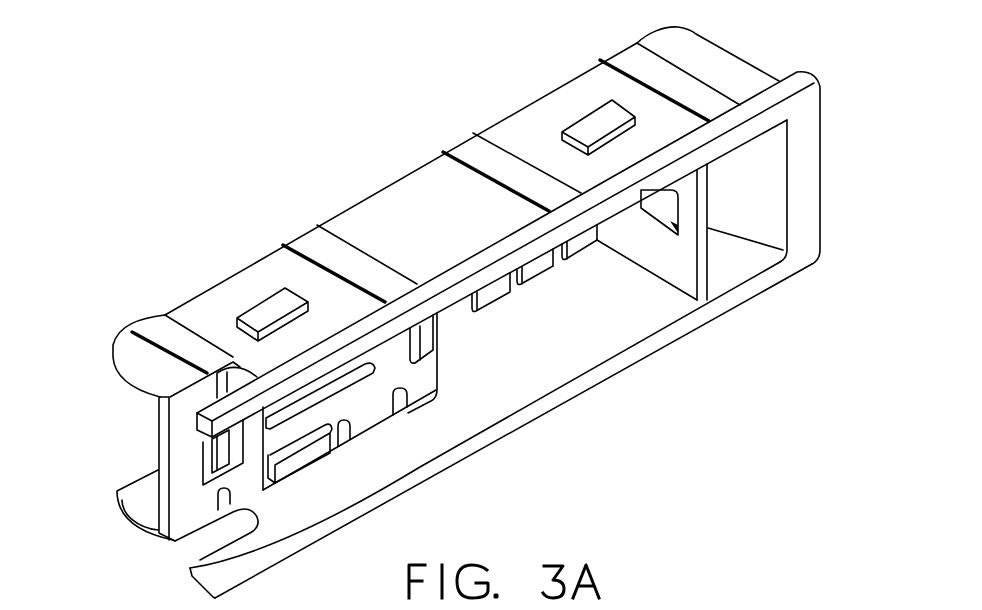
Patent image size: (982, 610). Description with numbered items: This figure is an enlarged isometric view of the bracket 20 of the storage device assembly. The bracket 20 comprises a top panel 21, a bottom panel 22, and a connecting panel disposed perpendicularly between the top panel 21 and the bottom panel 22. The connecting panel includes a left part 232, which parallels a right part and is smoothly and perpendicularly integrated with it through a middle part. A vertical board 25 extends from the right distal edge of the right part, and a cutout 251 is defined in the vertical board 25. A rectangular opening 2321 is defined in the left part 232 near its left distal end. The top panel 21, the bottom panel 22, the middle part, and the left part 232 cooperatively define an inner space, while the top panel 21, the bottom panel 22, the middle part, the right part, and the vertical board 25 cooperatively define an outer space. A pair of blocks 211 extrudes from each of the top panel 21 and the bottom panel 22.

The bracket 20 is at (770, 38).
The top panel 21 is at (432, 217).
The block 211 is at (273, 308).
The bottom panel 22 is at (588, 335).
The left part 232 is at (365, 405).
The rectangular opening 2321 is at (217, 455).
The vertical board 25 is at (668, 257).
The cutout 251 is at (668, 202).